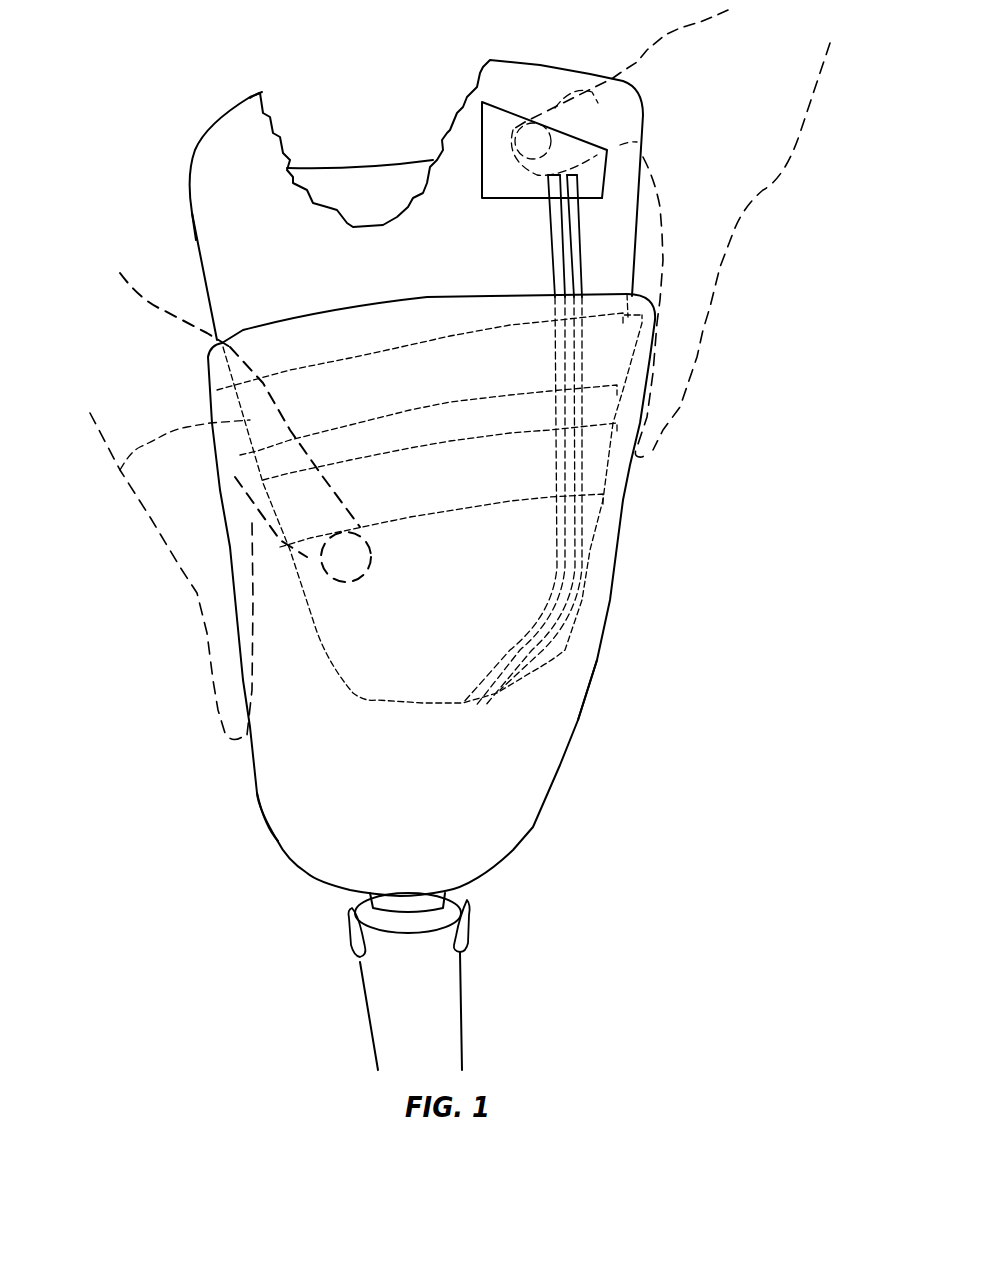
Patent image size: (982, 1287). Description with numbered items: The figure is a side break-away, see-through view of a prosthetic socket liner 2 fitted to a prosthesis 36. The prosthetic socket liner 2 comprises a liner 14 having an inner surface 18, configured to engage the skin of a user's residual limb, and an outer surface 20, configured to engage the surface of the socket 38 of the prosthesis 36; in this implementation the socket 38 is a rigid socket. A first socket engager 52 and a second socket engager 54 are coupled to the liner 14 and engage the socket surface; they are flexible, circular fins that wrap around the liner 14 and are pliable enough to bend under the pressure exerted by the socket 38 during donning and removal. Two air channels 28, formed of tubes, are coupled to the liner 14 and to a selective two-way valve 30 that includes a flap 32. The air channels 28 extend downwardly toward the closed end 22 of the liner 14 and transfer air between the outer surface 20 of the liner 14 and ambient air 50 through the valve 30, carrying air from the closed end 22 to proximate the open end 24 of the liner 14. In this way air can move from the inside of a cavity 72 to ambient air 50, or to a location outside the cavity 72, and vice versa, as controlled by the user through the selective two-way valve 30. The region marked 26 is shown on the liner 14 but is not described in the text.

The prosthetic socket liner 2 is at (140, 160).
The liner 14 is at (247, 98).
The inner surface 18 is at (385, 209).
The outer surface 20 is at (273, 289).
The closed end 22 is at (450, 703).
The open end 24 is at (573, 69).
The outer surface of liner 26 is at (191, 215).
The air channels 28 is at (553, 248).
The selective two-way valve 30 is at (604, 198).
The flap 32 is at (510, 200).
The prosthesis 36 is at (592, 825).
The socket 38 is at (278, 838).
The ambient air 50 is at (777, 315).
The first socket engager 52 is at (120, 470).
The second socket engager 54 is at (620, 473).
The cavity 72 is at (505, 845).